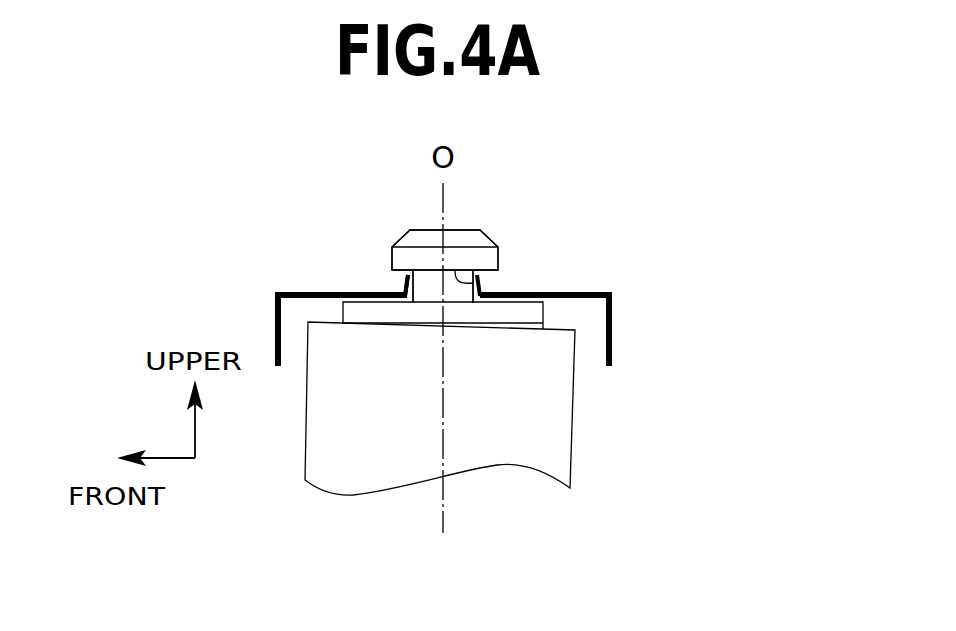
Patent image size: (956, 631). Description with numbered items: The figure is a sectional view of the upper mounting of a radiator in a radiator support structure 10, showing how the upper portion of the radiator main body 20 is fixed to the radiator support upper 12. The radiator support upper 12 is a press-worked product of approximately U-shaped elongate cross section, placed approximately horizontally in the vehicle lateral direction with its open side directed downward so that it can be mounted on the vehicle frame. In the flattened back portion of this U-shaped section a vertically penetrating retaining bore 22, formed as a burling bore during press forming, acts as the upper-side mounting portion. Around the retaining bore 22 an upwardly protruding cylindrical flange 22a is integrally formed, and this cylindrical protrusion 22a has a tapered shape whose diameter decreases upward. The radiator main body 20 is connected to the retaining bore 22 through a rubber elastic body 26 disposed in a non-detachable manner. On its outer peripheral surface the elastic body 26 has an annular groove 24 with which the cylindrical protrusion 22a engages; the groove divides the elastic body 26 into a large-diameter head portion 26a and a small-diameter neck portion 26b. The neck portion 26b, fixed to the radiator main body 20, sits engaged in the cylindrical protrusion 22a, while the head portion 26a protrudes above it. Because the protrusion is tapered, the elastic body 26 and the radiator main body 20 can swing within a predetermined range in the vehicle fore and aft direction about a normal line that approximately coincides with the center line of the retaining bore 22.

The mounting structure 10 is at (656, 277).
The radiator support upper 12 is at (300, 292).
The radiator main body 20 is at (337, 519).
The retaining bore 22 is at (413, 283).
The cylindrical flange 22a is at (398, 279).
The annular groove 24 is at (488, 286).
The elastic body 26 is at (466, 192).
The head portion 26a is at (468, 257).
The neck portion 26b is at (453, 287).